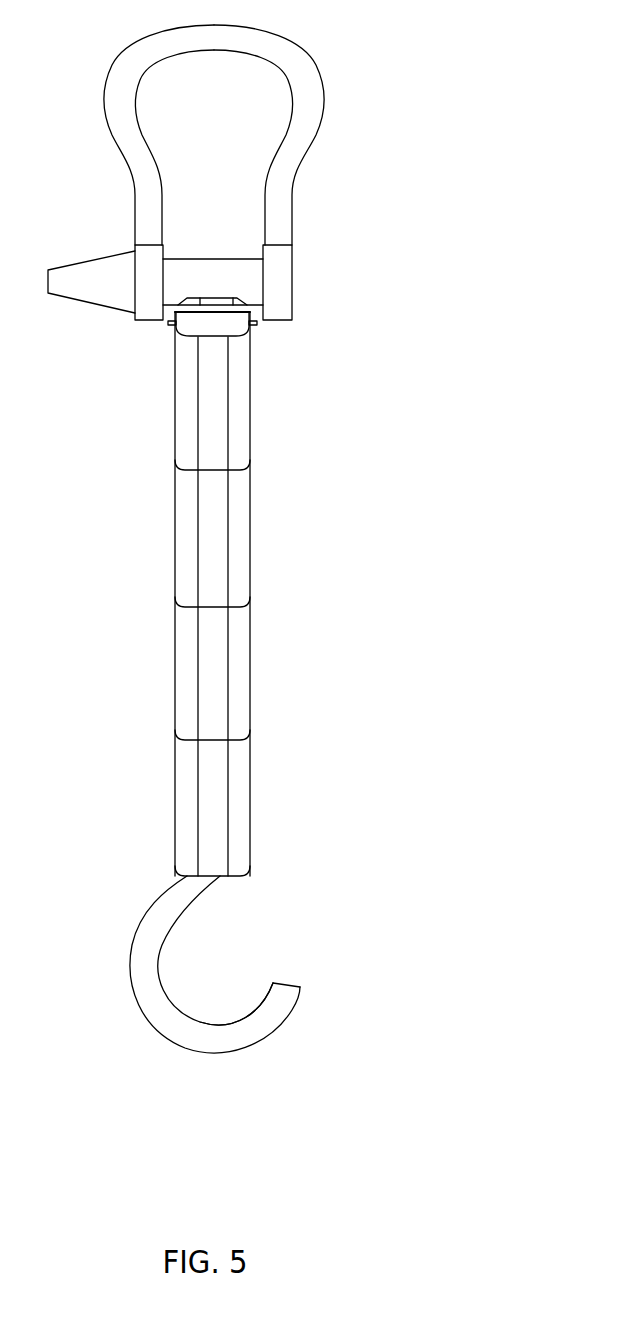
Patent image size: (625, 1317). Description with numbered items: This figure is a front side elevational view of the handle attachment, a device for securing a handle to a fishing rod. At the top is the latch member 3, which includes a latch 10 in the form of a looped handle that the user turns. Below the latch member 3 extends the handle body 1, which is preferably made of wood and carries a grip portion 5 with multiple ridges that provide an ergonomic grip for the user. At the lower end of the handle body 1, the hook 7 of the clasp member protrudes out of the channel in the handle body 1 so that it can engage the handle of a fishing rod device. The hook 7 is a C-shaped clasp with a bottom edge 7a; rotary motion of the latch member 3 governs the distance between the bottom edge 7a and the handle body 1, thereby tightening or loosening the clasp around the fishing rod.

The latch 10 is at (140, 62).
The latch member 3 is at (330, 247).
The handle body 1 is at (183, 422).
The grip portion 5 is at (241, 524).
The hook 7 is at (143, 983).
The bottom edge 7a is at (222, 1030).